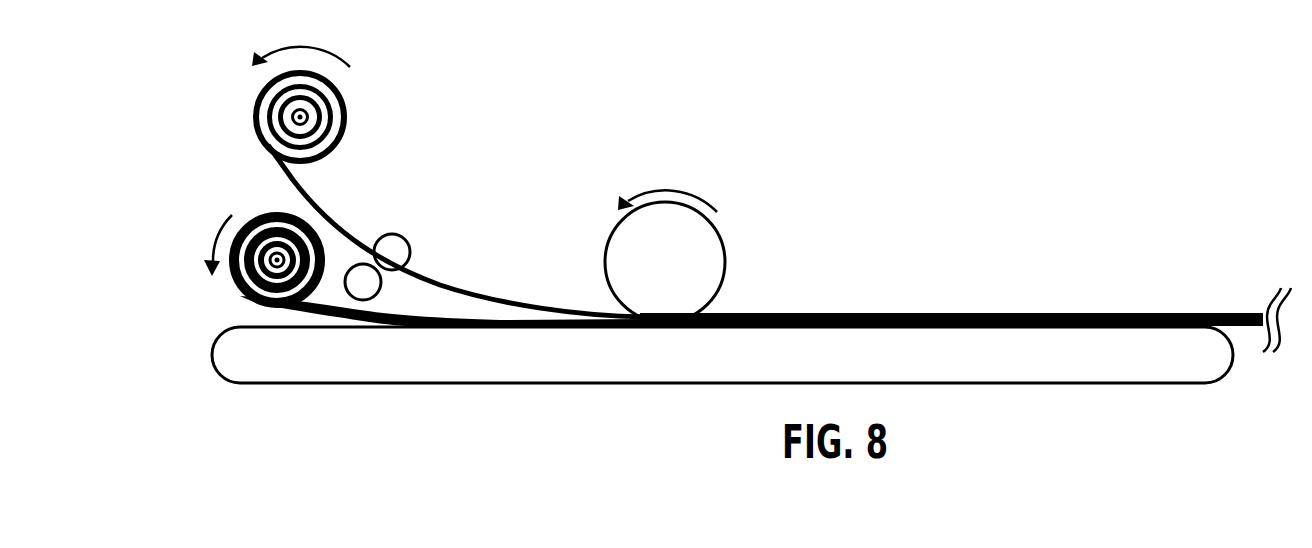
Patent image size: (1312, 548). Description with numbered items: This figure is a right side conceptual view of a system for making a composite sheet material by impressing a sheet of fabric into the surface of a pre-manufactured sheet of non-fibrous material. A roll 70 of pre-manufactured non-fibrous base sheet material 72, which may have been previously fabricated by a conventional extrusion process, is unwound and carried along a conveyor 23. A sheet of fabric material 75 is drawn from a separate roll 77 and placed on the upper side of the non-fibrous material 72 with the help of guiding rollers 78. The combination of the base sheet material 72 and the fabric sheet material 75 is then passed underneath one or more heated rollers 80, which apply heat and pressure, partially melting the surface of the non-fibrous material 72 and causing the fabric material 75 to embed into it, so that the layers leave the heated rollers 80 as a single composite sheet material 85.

The conveyor 23 is at (468, 353).
The roll 70 is at (277, 212).
The non-fibrous base sheet material 72 is at (203, 390).
The fabric sheet material 75 is at (430, 290).
The roll 77 is at (345, 121).
The guiding rollers 78 is at (363, 264).
The heated rollers 80 is at (725, 262).
The composite sheet material 85 is at (960, 313).